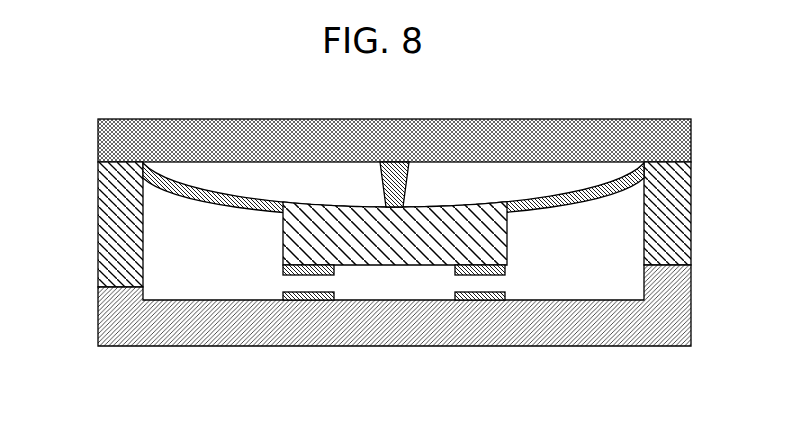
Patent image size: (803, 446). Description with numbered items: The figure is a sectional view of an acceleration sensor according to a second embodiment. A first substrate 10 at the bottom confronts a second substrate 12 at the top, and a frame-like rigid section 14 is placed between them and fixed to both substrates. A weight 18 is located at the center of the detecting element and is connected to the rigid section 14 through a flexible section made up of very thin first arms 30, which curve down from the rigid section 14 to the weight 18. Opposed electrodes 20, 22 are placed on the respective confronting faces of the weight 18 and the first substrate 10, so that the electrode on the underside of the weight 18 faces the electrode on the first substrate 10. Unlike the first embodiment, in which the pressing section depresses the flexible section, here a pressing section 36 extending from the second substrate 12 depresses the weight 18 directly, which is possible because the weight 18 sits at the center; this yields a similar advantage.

The first substrate 10 is at (113, 308).
The second substrate 12 is at (118, 140).
The rigid section 14 is at (113, 225).
The weight 18 is at (398, 240).
The first opposed electrode 20 is at (318, 295).
The second opposed electrode 22 is at (493, 297).
The first arm 30 is at (238, 199).
The pressing section 36 is at (393, 182).